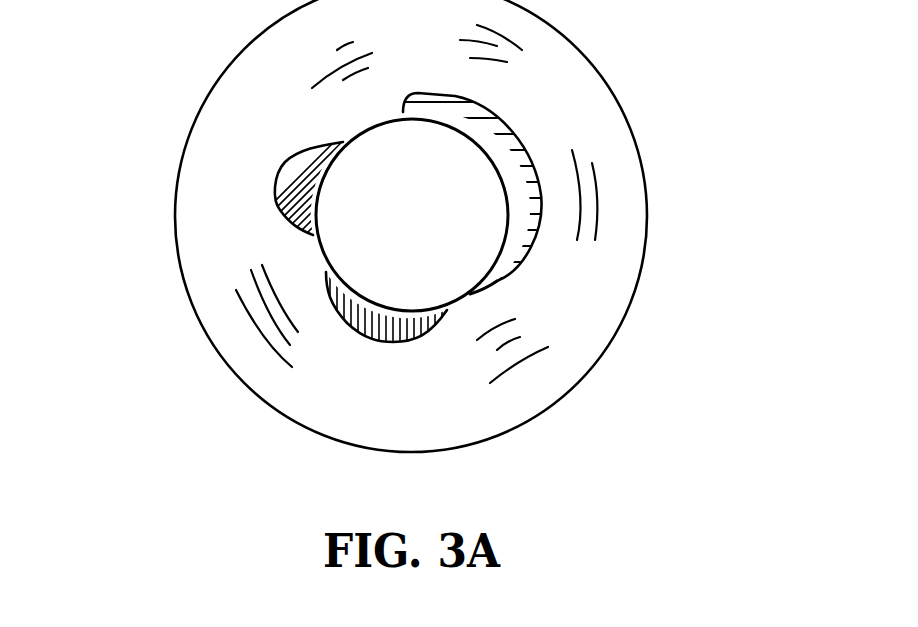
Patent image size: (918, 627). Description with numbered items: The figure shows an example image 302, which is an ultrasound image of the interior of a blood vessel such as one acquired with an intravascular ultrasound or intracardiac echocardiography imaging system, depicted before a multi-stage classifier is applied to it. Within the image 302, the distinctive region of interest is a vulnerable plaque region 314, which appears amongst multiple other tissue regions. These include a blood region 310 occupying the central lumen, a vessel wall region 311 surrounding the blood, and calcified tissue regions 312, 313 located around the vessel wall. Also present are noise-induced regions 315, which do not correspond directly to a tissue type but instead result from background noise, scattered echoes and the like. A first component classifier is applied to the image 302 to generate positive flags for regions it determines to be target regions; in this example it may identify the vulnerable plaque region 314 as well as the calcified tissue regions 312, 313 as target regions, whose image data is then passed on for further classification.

The image 302 is at (604, 70).
The blood region 310 is at (413, 152).
The vessel wall region 311 is at (473, 290).
The calcified tissue region 312 is at (370, 337).
The calcified tissue region 313 is at (523, 137).
The vulnerable plaque region 314 is at (277, 190).
The noise-induced regions 315 is at (600, 216).